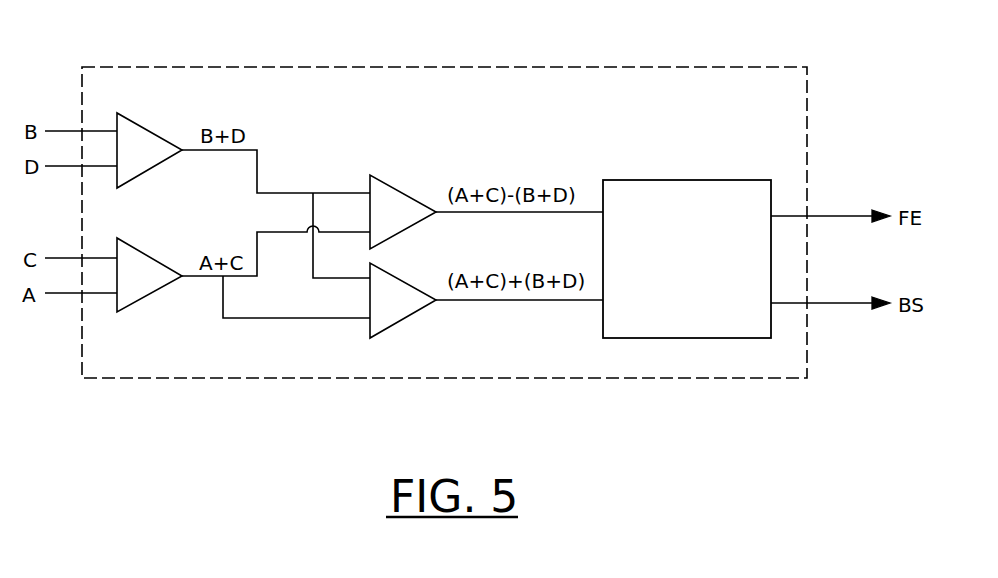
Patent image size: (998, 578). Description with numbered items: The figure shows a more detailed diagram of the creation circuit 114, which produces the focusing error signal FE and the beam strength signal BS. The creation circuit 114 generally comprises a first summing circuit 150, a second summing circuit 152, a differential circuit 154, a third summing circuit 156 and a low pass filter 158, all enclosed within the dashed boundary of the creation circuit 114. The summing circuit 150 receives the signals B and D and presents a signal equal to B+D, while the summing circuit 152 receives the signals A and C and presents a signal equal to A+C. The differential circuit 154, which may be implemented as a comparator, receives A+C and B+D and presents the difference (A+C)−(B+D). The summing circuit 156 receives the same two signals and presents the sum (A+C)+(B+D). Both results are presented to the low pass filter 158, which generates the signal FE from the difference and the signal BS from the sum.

The creation circuit 114 is at (382, 66).
The summing circuit 150 is at (137, 122).
The summing circuit 152 is at (137, 247).
The differential circuit 154 is at (388, 183).
The summing circuit 156 is at (387, 330).
The low pass filter 158 is at (668, 179).